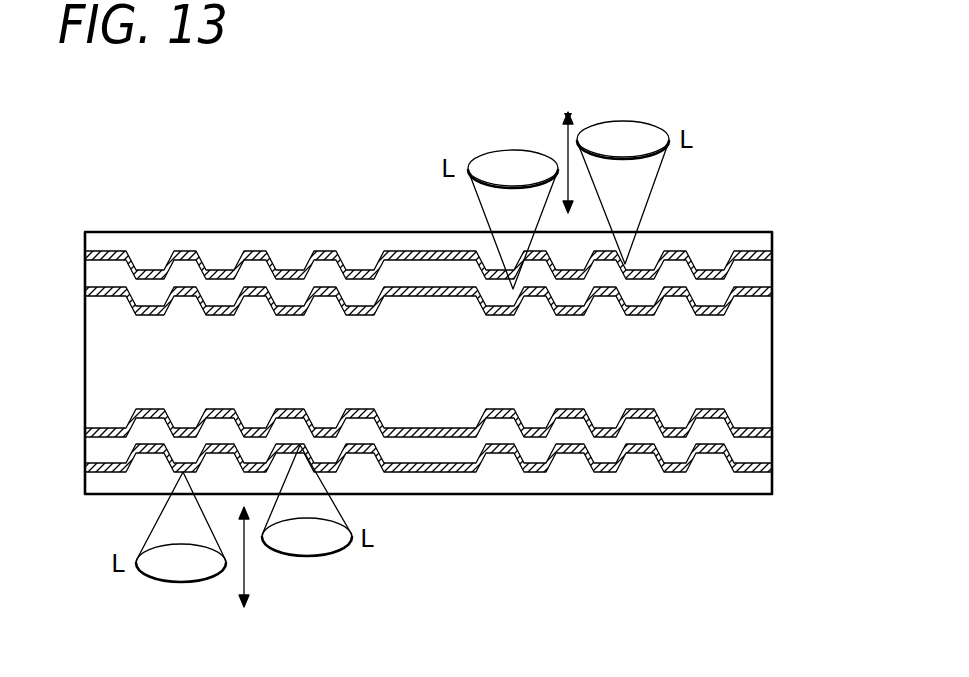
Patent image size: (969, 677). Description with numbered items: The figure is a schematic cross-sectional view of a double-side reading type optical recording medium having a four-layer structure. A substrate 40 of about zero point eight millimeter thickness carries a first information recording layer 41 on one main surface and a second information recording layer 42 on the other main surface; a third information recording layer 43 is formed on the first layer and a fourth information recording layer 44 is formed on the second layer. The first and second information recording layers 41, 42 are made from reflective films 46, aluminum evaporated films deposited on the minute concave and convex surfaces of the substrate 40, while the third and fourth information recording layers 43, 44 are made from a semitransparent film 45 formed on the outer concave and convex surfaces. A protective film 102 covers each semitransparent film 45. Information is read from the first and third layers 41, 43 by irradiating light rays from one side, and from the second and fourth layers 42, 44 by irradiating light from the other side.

The substrate 40 is at (743, 352).
The first information recording layer 41 is at (772, 432).
The second information recording layer 42 is at (772, 289).
The third information recording layer 43 is at (772, 467).
The fourth information recording layer 44 is at (772, 254).
The semitransparent film 45 is at (435, 341).
The reflective film 46 is at (437, 349).
The protective film 102 is at (220, 250).